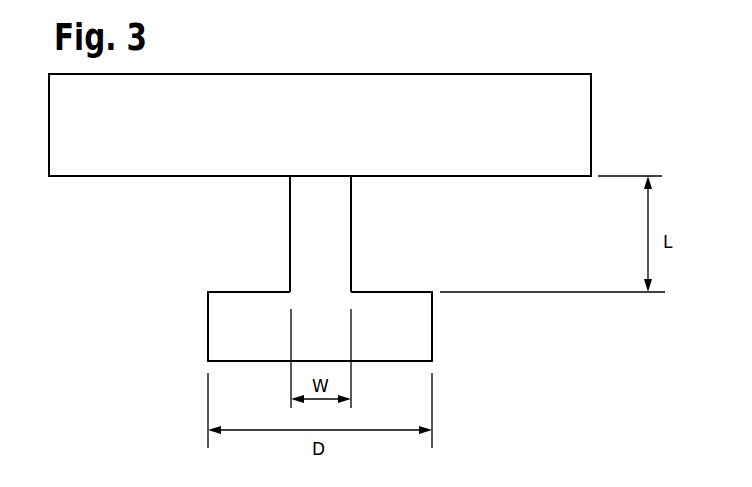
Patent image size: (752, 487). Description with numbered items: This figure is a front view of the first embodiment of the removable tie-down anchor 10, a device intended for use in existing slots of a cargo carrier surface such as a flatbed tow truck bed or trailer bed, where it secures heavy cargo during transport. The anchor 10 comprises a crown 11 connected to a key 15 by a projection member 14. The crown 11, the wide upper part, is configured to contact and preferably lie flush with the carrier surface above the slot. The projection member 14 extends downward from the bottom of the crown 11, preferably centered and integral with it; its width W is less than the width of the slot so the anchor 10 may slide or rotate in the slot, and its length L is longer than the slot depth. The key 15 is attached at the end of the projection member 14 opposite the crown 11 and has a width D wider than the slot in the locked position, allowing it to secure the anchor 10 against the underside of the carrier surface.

The anchor 10 is at (491, 53).
The crown 11 is at (591, 92).
The projection member 14 is at (291, 221).
The key 15 is at (208, 323).